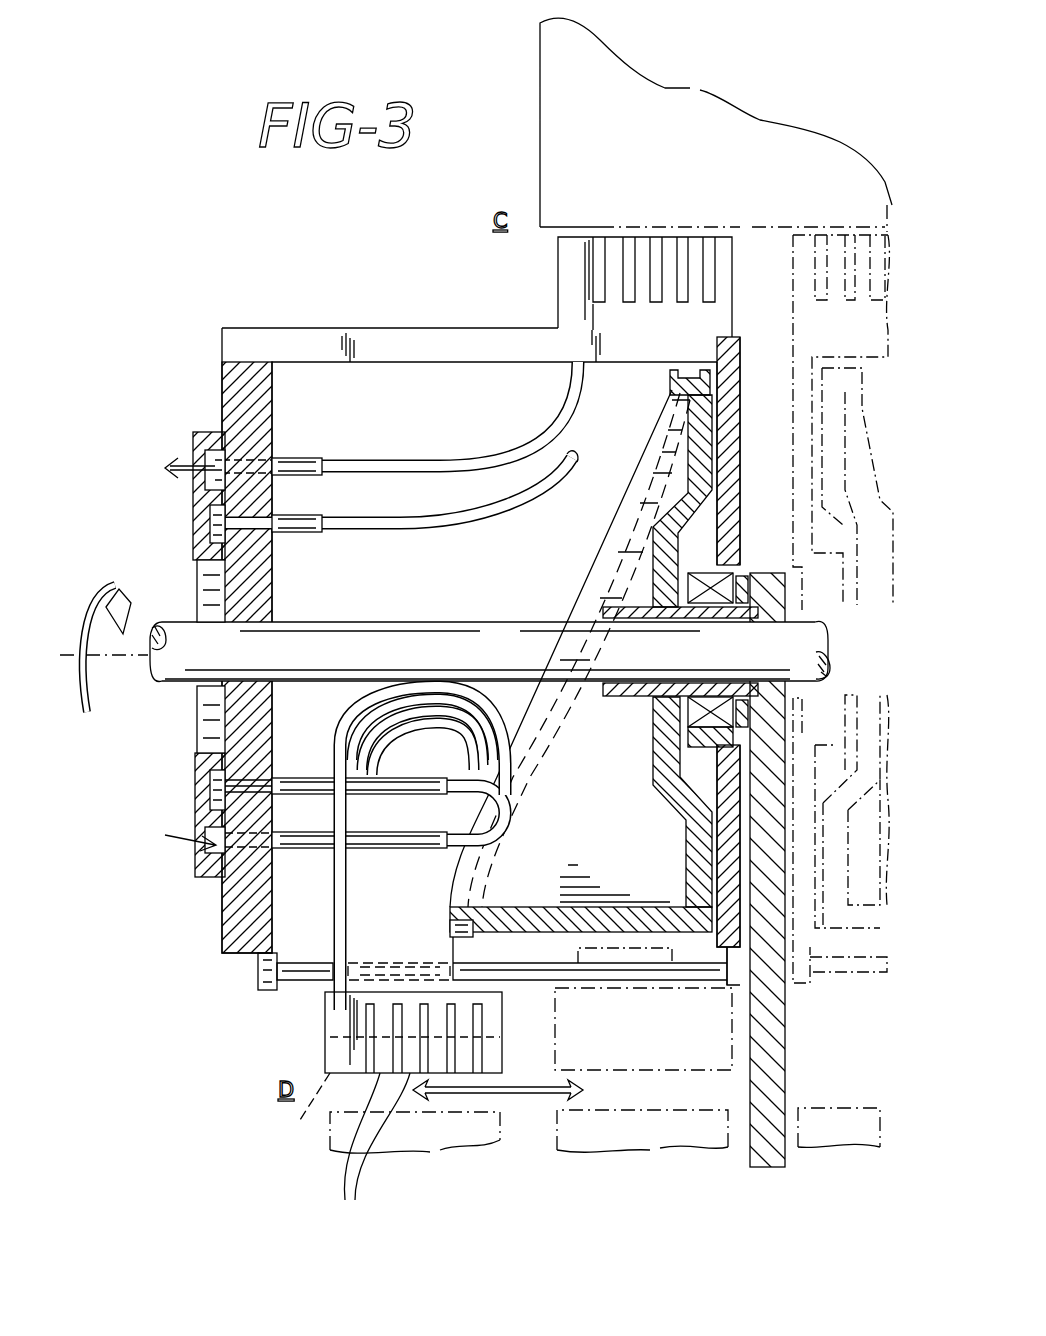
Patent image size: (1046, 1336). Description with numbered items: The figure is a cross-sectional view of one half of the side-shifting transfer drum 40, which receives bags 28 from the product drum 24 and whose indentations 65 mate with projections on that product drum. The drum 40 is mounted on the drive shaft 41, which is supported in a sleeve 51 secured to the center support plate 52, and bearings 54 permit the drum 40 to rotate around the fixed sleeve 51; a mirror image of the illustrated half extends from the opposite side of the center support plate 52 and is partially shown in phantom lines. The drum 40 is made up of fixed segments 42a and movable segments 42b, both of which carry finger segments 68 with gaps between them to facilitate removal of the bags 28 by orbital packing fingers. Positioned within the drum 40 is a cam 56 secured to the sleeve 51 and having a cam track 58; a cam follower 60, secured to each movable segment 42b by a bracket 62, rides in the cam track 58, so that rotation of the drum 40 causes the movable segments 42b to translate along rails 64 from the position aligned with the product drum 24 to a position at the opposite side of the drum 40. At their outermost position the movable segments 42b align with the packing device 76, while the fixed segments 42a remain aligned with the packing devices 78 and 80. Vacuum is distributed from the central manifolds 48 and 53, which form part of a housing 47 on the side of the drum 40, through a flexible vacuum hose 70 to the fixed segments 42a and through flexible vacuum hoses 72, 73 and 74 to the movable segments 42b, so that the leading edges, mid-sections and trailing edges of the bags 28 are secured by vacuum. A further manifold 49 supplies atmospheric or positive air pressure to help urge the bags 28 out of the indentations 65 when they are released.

The product drum 24 is at (540, 125).
The bags 28 is at (465, 1085).
The transfer drum 40 is at (197, 382).
The shaft 41 is at (370, 622).
The fixed segments 42a is at (558, 282).
The movable segments 42b is at (318, 1035).
The housing 47 is at (195, 805).
The central manifold 48 is at (195, 530).
The manifold 49 is at (195, 850).
The sleeve 51 is at (622, 700).
The center support plate 52 is at (785, 1037).
The central manifold 53 is at (190, 452).
The bearings 54 is at (732, 580).
The cam 56 is at (590, 600).
The cam track 58 is at (655, 490).
The cam follower 60 is at (445, 928).
The bracket 62 is at (470, 963).
The rails 64 is at (300, 985).
The indentations 65 is at (297, 1110).
The finger segments 68 is at (645, 237).
The flexible vacuum hose 70 is at (455, 530).
The flexible vacuum hose 72 is at (333, 718).
The flexible vacuum hose 73 is at (505, 822).
The flexible vacuum hose 74 is at (448, 458).
The packing device 76 is at (470, 1150).
The packing device 78 is at (652, 1140).
The packing device 80 is at (822, 1140).